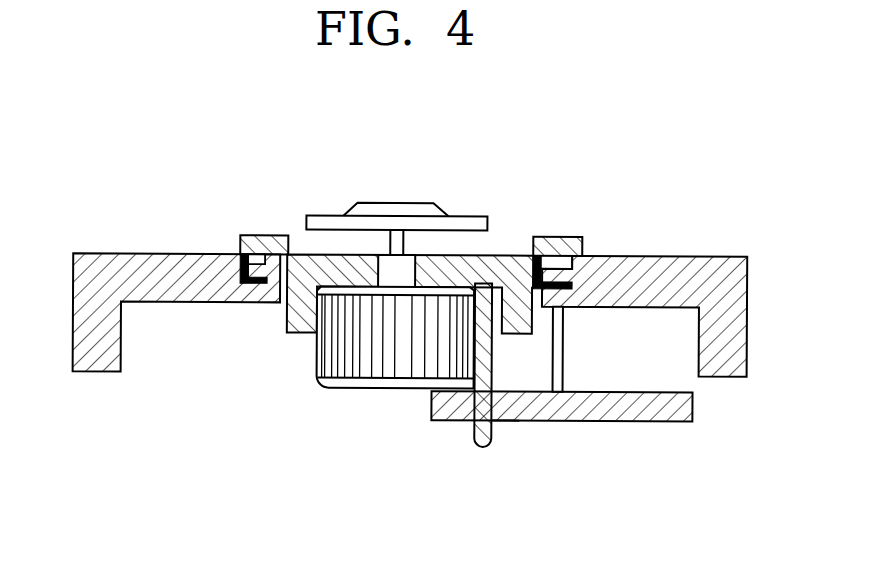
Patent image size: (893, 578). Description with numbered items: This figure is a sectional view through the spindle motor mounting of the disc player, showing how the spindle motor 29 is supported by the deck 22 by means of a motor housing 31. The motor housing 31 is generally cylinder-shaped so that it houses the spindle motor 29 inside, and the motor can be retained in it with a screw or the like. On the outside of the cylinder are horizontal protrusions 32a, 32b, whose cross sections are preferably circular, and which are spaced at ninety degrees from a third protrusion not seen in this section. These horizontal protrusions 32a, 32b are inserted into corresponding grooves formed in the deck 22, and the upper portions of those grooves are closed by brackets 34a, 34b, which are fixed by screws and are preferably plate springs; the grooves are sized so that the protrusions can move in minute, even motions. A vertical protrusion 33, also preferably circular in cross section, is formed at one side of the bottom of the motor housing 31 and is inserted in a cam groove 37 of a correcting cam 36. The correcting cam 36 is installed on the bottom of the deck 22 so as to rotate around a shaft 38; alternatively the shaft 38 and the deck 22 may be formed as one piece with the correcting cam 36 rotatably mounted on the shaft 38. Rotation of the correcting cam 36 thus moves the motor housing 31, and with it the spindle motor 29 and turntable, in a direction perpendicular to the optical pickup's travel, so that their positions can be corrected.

The deck 22 is at (110, 262).
The spindle motor 29 is at (358, 391).
The motor housing 31 is at (308, 262).
The horizontal protrusion 32a is at (263, 278).
The horizontal protrusion 32b is at (585, 268).
The vertical protrusion 33 is at (483, 452).
The bracket 34a is at (252, 246).
The bracket 34b is at (558, 248).
The correcting cam 36 is at (666, 422).
The cam groove 37 is at (507, 422).
The shaft 38 is at (565, 357).